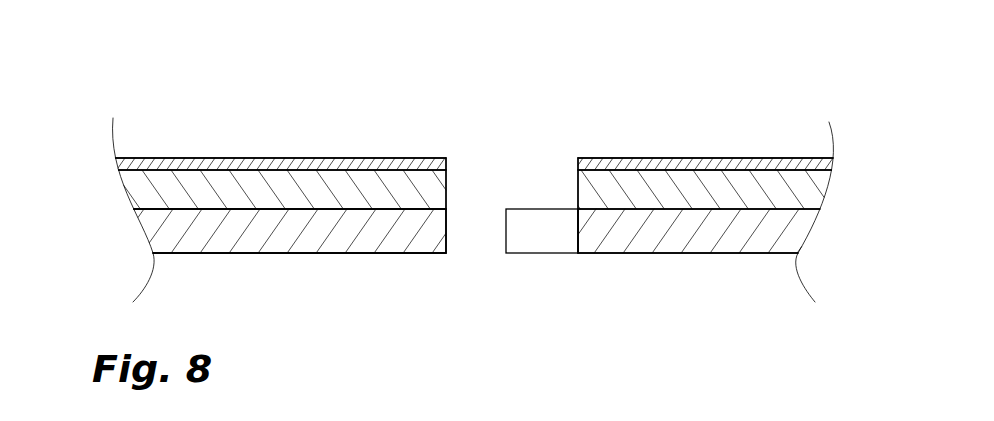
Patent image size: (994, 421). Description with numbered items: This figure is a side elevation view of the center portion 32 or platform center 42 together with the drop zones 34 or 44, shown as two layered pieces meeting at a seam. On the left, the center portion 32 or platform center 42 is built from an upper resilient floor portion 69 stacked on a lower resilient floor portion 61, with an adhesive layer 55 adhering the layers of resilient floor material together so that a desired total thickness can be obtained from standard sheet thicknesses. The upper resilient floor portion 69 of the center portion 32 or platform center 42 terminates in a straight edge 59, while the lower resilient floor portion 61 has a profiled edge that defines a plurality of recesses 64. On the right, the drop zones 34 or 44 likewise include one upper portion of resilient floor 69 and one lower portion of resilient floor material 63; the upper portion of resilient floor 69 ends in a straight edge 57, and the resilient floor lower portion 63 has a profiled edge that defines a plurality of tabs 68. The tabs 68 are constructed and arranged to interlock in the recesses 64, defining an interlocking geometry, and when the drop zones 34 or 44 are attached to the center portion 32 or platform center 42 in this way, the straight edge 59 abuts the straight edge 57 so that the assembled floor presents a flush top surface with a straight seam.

The center portion 32 is at (281, 137).
The platform center 42 is at (281, 108).
The drop zone 34 is at (705, 140).
The drop zone 44 is at (722, 112).
The adhesive layer 55 is at (290, 159).
The straight edge 59 is at (465, 180).
The straight edge 57 is at (582, 185).
The resilient floor portion 69 is at (475, 192).
The resilient floor portion 61 is at (260, 237).
The resilient floor lower portion 63 is at (726, 232).
The recess 64 is at (299, 271).
The tab 68 is at (542, 270).